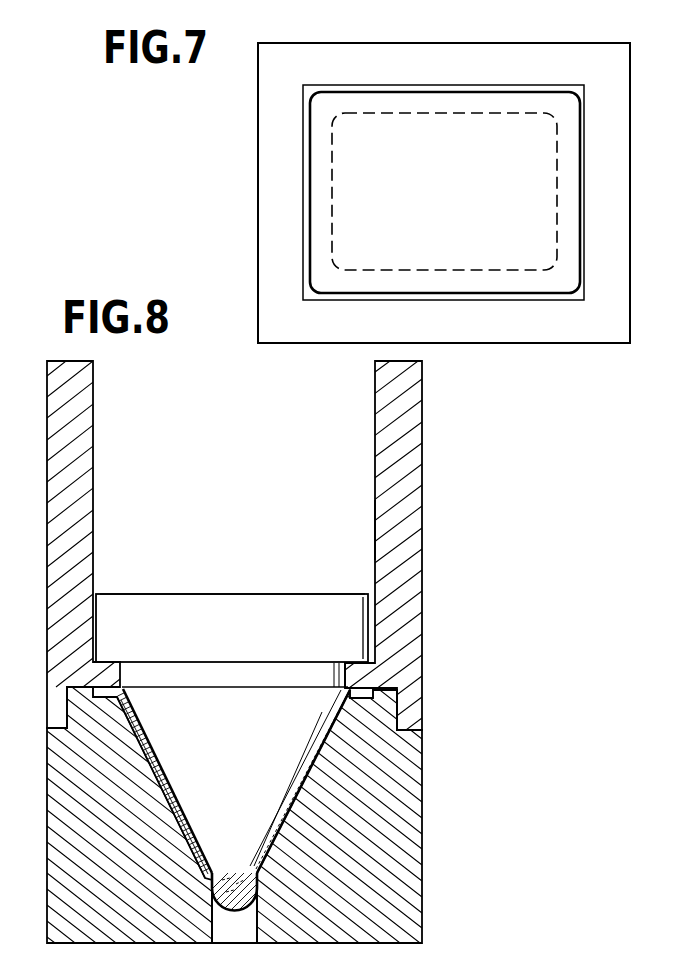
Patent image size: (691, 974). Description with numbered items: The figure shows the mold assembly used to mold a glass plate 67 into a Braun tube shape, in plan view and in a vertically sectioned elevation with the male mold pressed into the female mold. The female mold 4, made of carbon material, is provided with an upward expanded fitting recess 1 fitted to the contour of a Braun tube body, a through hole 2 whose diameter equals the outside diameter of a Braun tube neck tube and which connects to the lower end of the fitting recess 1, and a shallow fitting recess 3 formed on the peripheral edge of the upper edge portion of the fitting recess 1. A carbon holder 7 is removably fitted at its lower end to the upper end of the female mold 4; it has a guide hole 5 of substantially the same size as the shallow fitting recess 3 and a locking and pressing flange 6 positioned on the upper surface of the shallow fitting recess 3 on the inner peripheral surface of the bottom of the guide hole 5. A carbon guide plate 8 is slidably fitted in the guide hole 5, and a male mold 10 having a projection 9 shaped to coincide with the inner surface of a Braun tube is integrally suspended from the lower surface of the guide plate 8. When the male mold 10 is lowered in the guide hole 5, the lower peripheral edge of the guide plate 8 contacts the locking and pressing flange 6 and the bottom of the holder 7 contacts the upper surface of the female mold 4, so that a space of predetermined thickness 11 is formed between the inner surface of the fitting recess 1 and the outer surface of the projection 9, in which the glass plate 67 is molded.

In FIG. 8, the fitting recess 1 is at (288, 832).
In FIG. 8, the through hole 2 is at (247, 925).
In FIG. 8, the shallow fitting recess 3 is at (368, 705).
In FIG. 8, the female mold 4 is at (407, 838).
In FIG. 7, the guide hole 5 is at (308, 238).
In FIG. 8, the guide hole 5 is at (375, 537).
In FIG. 8, the locking and pressing flange 6 is at (360, 666).
In FIG. 7, the holder 7 is at (617, 123).
In FIG. 8, the holder 7 is at (411, 468).
In FIG. 7, the guide plate 8 is at (543, 226).
In FIG. 8, the guide plate 8 is at (203, 621).
In FIG. 8, the projection 9 is at (210, 772).
In FIG. 7, the male mold 10 is at (321, 159).
In FIG. 8, the male mold 10 is at (110, 623).
In FIG. 8, the predetermined thickness 11 is at (153, 748).
In FIG. 8, the glass plate 67 is at (187, 830).